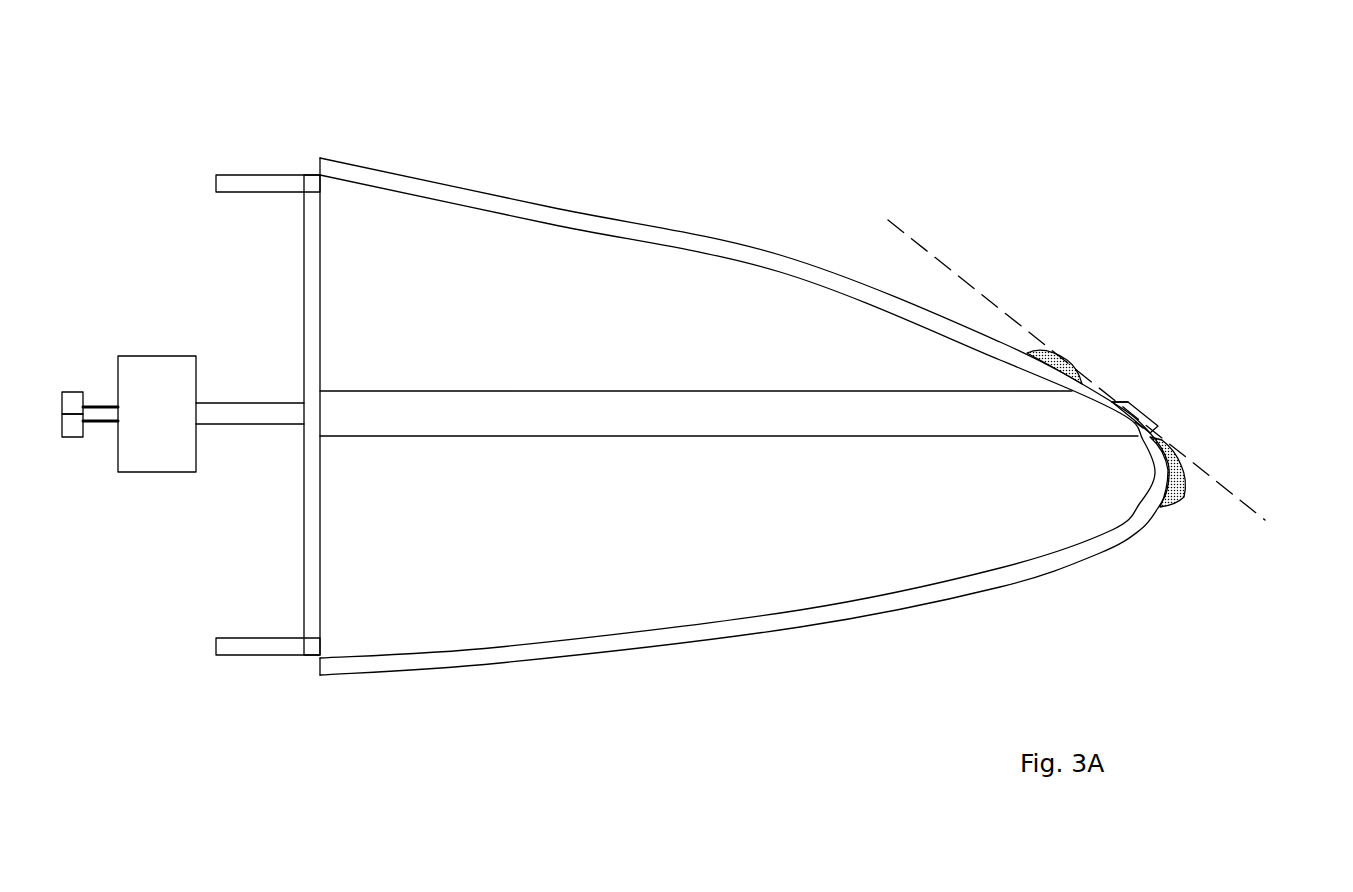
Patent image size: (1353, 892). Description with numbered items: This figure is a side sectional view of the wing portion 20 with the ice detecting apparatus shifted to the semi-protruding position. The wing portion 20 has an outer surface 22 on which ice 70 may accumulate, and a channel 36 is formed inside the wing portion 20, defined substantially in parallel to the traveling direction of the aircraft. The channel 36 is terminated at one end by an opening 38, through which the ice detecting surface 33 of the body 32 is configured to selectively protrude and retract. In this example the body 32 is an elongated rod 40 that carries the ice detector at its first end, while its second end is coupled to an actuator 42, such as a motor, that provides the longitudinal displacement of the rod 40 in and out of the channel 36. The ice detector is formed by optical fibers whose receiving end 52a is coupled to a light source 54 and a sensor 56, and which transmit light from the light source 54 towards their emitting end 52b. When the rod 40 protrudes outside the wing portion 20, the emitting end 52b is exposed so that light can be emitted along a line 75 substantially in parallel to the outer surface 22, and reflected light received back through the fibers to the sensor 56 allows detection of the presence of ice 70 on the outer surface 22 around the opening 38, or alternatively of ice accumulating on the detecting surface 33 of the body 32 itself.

The wing portion 20 is at (682, 170).
The outer surface 22 is at (785, 257).
The body 32 is at (1152, 410).
The ice detecting surface 33 is at (1127, 403).
The channel 36 is at (900, 390).
The opening 38 is at (1111, 400).
The elongated rod 40 is at (230, 425).
The actuator 42 is at (172, 356).
The receiving end 52a is at (100, 406).
The emitting end 52b is at (1143, 427).
The light source 54 is at (75, 392).
The sensor 56 is at (72, 437).
The ice 70 is at (1056, 352).
The line 75 is at (912, 235).